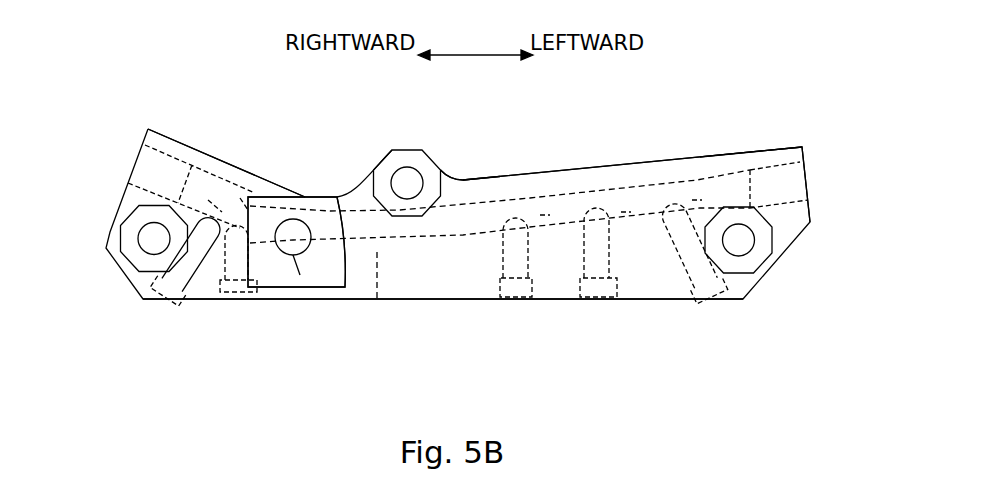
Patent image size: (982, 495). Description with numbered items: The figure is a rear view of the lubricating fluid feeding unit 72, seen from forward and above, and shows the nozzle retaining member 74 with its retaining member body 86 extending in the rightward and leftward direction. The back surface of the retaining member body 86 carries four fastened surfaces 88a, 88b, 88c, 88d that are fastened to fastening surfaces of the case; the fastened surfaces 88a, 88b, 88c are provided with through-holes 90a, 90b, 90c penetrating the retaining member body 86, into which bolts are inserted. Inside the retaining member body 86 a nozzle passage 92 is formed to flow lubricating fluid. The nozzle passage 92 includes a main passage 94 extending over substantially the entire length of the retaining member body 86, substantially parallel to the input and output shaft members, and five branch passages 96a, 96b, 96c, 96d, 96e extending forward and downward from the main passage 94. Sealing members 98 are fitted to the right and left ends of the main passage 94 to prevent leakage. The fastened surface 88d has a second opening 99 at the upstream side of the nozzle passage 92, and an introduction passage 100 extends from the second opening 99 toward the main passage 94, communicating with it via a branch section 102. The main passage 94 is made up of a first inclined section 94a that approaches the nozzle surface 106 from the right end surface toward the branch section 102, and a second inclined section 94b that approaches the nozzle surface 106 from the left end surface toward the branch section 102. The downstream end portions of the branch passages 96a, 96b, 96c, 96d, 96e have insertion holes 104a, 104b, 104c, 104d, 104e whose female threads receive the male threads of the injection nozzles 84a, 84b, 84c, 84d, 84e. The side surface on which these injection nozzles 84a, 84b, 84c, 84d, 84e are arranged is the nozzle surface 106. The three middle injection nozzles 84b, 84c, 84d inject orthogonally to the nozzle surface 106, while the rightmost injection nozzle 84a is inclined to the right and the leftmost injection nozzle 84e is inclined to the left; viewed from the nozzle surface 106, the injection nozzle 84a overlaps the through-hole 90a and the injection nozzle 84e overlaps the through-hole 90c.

The lubricating fluid feeding unit 72 is at (235, 87).
The nozzle retaining member 74 is at (657, 158).
The injection nozzle 84a is at (162, 300).
The injection nozzle 84b is at (240, 300).
The injection nozzle 84c is at (515, 300).
The injection nozzle 84d is at (602, 300).
The injection nozzle 84e is at (688, 300).
The retaining member body 86 is at (472, 188).
The fastened surface 88a is at (123, 217).
The fastened surface 88b is at (400, 160).
The fastened surface 88c is at (773, 232).
The fastened surface 88d is at (330, 197).
The through-hole 90a is at (141, 252).
The through-hole 90b is at (419, 170).
The through-hole 90c is at (750, 251).
The nozzle passage 92 is at (463, 235).
The main passage 94 is at (377, 298).
The first inclined section 94a is at (240, 165).
The second inclined section 94b is at (733, 178).
The branch passage 96a is at (215, 200).
The branch passage 96b is at (245, 200).
The branch passage 96c is at (545, 215).
The branch passage 96d is at (626, 212).
The branch passage 96e is at (697, 200).
The sealing member 98 is at (148, 170).
The second opening 99 is at (300, 275).
The introduction passage 100 is at (293, 237).
The branch section 102 is at (293, 237).
The insertion hole 104a is at (130, 300).
The insertion hole 104b is at (213, 300).
The insertion hole 104c is at (547, 300).
The insertion hole 104d is at (633, 300).
The insertion hole 104e is at (728, 300).
The nozzle surface 106 is at (408, 300).